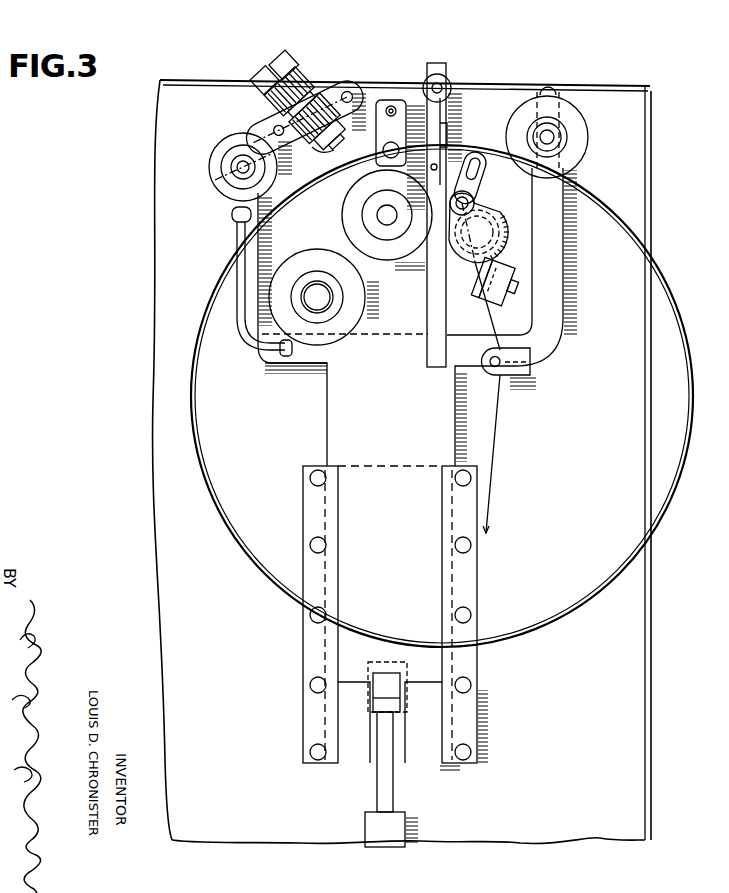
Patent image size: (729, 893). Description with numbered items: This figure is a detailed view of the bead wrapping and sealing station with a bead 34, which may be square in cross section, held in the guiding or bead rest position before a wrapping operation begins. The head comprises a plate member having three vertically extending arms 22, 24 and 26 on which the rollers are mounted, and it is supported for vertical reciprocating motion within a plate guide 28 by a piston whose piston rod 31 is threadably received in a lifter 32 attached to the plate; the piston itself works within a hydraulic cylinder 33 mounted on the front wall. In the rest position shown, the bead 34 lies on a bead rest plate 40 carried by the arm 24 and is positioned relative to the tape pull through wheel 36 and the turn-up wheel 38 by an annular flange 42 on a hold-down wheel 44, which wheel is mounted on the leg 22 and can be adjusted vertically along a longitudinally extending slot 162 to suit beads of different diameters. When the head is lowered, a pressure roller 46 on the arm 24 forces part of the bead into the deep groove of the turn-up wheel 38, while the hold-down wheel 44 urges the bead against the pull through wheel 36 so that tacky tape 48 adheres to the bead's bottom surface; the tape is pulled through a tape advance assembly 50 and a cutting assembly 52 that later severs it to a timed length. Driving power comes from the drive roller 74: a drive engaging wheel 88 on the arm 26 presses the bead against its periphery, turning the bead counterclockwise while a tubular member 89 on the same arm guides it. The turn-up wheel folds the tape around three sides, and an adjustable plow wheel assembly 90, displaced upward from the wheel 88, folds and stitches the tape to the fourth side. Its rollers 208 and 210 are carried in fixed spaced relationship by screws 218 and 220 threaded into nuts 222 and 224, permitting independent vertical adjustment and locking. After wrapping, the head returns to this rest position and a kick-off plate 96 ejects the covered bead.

The vertically extending arm 22 is at (560, 343).
The vertically extending arm 24 is at (438, 318).
The vertically extending arm 26 is at (262, 358).
The plate guide 28 is at (468, 705).
The piston rod 31 is at (390, 785).
The lifter 32 is at (382, 688).
The hydraulic cylinder 33 is at (406, 826).
The bead 34 is at (229, 540).
The tape pull through wheel 36 is at (478, 203).
The turn-up wheel 38 is at (375, 262).
The bead rest plate 40 is at (447, 130).
The annular flange 42 is at (578, 160).
The hold-down wheel 44 is at (575, 128).
The pressure roller 46 is at (446, 80).
The tape 48 is at (496, 428).
The tape advance assembly 50 is at (494, 262).
The cutting assembly 52 is at (500, 226).
The drive roller 74 is at (370, 308).
The drive engaging wheel 88 is at (222, 181).
The tubular member 89 is at (236, 326).
The plow wheel assembly 90 is at (318, 72).
The kick-off plate 96 is at (399, 100).
The longitudinally extending slot 162 is at (555, 98).
The roller 208 is at (333, 140).
The roller 210 is at (326, 150).
The screw 218 is at (288, 60).
The screw 220 is at (262, 72).
The nut 222 is at (345, 86).
The nut 224 is at (258, 108).